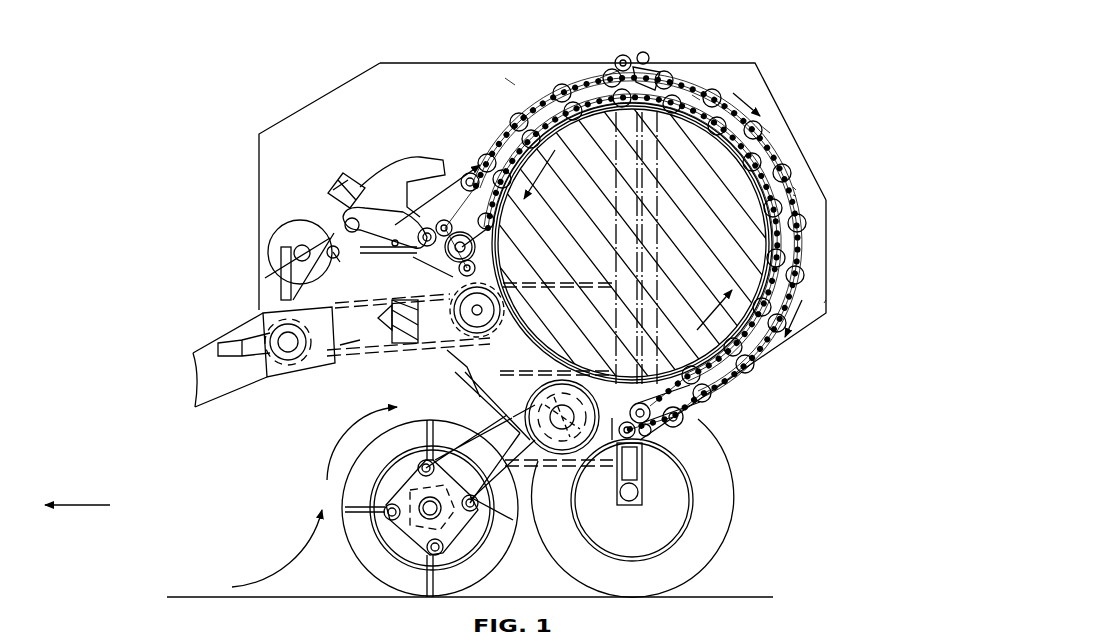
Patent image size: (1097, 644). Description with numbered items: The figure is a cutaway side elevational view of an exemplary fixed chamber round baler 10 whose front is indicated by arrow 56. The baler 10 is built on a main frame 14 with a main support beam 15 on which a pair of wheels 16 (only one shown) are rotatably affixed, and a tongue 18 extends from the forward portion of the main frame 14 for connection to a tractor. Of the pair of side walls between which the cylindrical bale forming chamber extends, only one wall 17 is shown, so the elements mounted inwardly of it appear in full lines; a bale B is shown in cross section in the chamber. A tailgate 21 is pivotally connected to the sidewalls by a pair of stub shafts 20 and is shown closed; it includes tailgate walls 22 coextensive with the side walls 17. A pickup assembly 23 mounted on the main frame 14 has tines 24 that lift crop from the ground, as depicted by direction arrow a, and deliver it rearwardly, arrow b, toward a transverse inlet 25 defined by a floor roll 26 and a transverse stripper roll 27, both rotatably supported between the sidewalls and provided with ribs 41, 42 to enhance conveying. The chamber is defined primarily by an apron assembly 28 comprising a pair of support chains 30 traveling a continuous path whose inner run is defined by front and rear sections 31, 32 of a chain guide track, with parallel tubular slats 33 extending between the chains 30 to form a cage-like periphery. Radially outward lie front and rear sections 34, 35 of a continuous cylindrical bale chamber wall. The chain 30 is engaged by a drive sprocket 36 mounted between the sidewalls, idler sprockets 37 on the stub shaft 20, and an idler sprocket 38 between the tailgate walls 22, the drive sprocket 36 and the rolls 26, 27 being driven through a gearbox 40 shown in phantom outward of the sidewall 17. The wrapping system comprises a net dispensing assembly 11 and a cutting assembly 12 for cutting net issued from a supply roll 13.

The round baler 10 is at (873, 55).
The net dispensing assembly 11 is at (333, 163).
The cutting assembly 12 is at (382, 337).
The supply roll 13 is at (280, 240).
The main frame 14 is at (440, 63).
The main support beam 15 is at (645, 462).
The wheels 16 is at (732, 517).
The side wall 17 is at (330, 108).
The tongue 18 is at (212, 388).
The stub shafts 20 is at (650, 62).
The tailgate 21 is at (810, 155).
The tailgate walls 22 is at (813, 307).
The pickup assembly 23 is at (332, 497).
The tines 24 is at (425, 570).
The transverse inlet 25 is at (462, 372).
The floor roll 26 is at (548, 465).
The stripper roll 27 is at (450, 323).
The apron assembly 28 is at (768, 135).
The support chains 30 is at (797, 195).
The front section of chain guide track 31 is at (510, 80).
The rear section of chain guide track 32 is at (793, 187).
The slats 33 is at (553, 82).
The front section of bale chamber wall 34 is at (610, 78).
The rear section of bale chamber wall 35 is at (698, 95).
The drive sprocket 36 is at (453, 218).
The idler sprockets 37 is at (641, 53).
The idler sprocket 38 is at (700, 408).
The gearbox 40 is at (288, 365).
The ribs 41 is at (513, 417).
The ribs 42 is at (450, 303).
The arrow 56 is at (73, 507).
The bale B is at (802, 243).
The direction arrow a is at (287, 563).
The direction arrow b is at (343, 443).